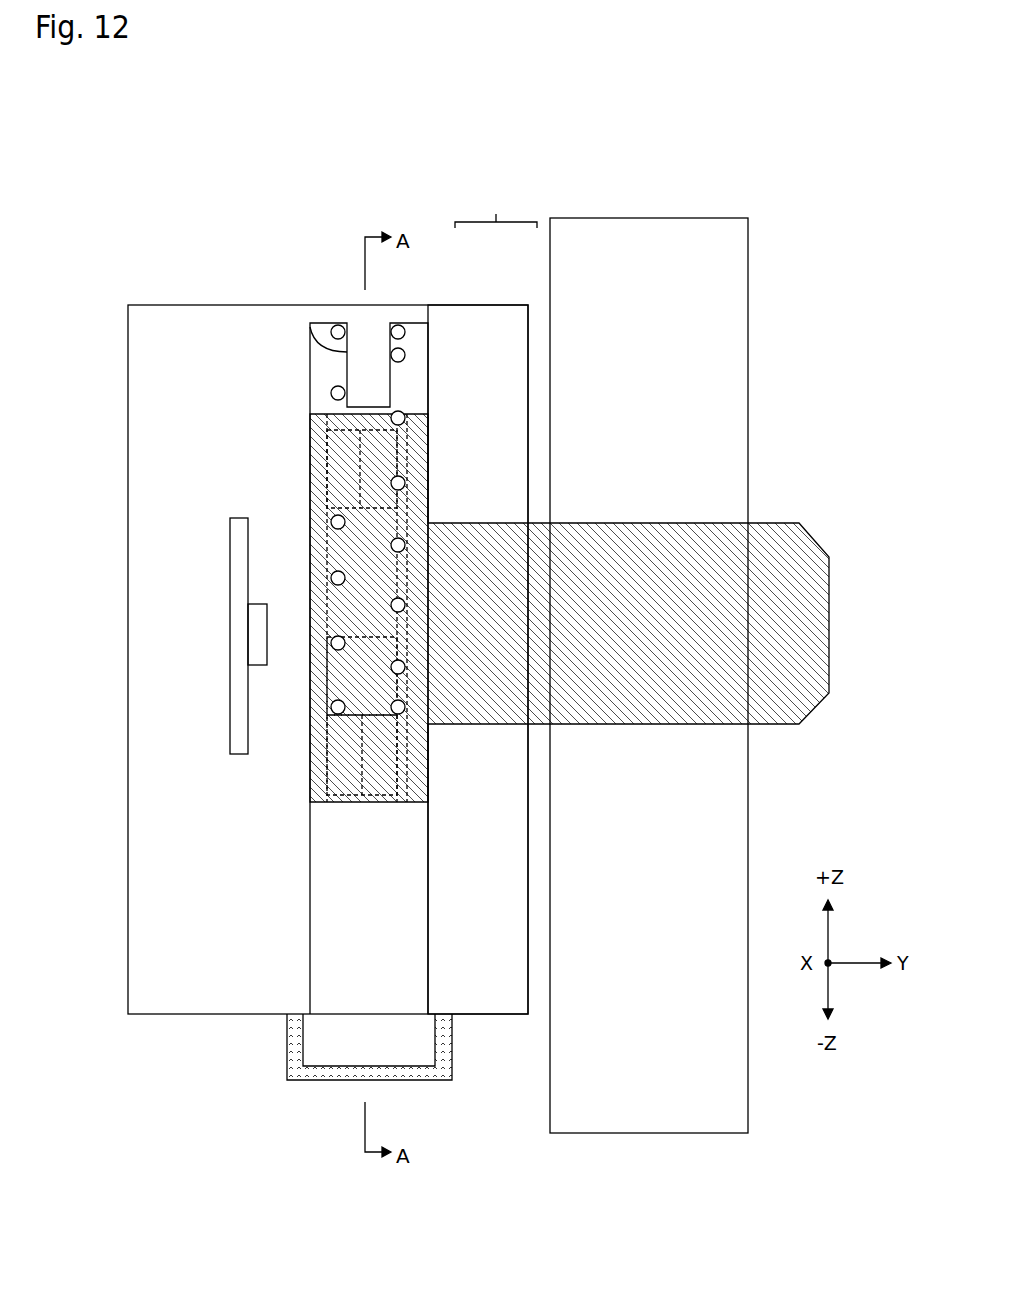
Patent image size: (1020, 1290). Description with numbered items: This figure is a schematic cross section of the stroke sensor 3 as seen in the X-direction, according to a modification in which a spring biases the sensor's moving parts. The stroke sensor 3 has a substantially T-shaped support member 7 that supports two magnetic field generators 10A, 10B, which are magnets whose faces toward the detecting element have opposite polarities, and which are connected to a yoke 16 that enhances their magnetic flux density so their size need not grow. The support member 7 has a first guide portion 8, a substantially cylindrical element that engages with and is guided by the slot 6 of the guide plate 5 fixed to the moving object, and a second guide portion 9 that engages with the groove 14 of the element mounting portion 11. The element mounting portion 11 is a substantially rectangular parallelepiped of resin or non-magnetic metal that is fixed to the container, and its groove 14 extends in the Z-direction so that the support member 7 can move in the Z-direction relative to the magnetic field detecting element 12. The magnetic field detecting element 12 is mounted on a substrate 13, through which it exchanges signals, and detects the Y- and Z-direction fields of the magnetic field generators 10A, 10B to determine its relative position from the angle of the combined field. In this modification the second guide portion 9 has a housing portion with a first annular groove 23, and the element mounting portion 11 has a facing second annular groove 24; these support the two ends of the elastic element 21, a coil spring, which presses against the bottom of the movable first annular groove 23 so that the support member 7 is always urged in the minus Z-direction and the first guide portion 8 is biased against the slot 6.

The stroke sensor 3 is at (507, 96).
The guide plate 5 is at (730, 285).
The slot 6 is at (610, 530).
The support member 7 is at (496, 209).
The first guide portion 8 is at (514, 550).
The second guide portion 9 is at (418, 452).
The magnetic field generator 10A is at (328, 476).
The magnetic field generator 10B is at (340, 803).
The element mounting portion 11 is at (188, 325).
The magnetic field detecting element 12 is at (257, 625).
The substrate 13 is at (243, 687).
The groove 14 is at (310, 923).
The yoke 16 is at (395, 580).
The elastic element 21 is at (333, 393).
The first annular groove 23 is at (350, 675).
The second annular groove 24 is at (340, 352).